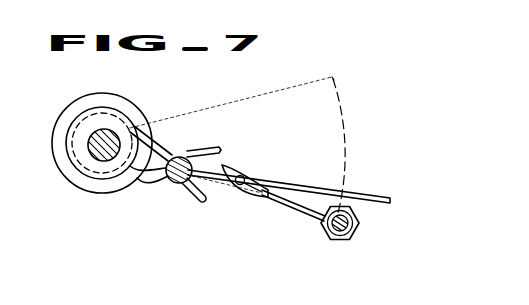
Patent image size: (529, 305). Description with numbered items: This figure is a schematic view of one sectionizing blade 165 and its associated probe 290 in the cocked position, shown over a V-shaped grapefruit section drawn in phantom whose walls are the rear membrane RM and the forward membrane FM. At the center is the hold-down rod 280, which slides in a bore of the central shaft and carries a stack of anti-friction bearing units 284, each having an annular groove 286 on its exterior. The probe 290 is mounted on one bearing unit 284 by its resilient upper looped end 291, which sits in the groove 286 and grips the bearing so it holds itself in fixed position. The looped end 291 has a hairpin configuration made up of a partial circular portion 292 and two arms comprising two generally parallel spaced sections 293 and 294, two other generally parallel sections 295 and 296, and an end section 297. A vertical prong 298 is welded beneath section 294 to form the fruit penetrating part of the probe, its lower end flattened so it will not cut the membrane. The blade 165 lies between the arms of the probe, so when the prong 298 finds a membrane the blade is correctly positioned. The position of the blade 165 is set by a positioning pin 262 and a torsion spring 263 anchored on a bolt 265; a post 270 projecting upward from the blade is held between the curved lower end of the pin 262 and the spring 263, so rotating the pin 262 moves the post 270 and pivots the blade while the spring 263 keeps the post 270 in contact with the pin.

The sectionizing blade 165 is at (369, 194).
The positioning pin 262 is at (256, 197).
The torsion spring 263 is at (284, 208).
The bolt 265 is at (358, 213).
The post 270 is at (242, 184).
The hold-down rod 280 is at (88, 143).
The anti-friction bearing unit 284 is at (107, 118).
The annular groove 286 is at (73, 158).
The probe 290 is at (182, 150).
The upper looped end 291 is at (110, 191).
The partial circular portion 292 is at (71, 124).
The parallel spaced section 293 is at (142, 180).
The parallel spaced section 294 is at (172, 147).
The parallel section 295 is at (162, 182).
The parallel section 296 is at (219, 154).
The end section 297 is at (197, 200).
The vertical prong 298 is at (193, 150).
The forward membrane FM is at (293, 83).
The rear membrane RM is at (296, 210).